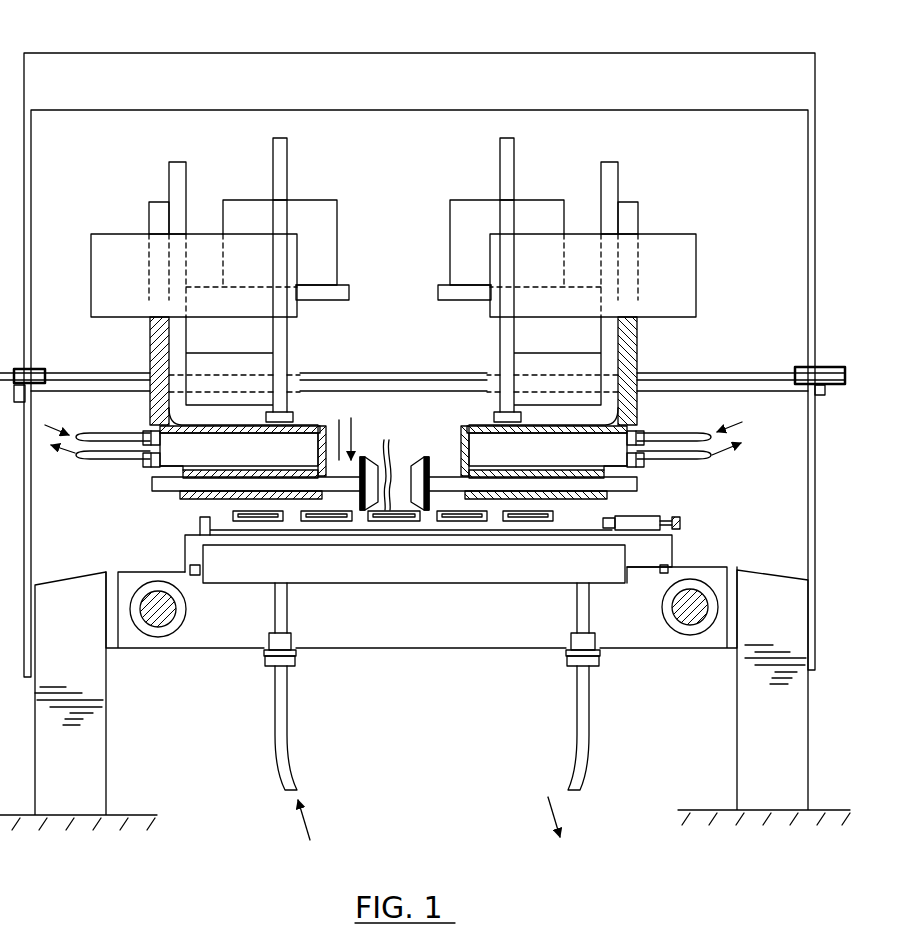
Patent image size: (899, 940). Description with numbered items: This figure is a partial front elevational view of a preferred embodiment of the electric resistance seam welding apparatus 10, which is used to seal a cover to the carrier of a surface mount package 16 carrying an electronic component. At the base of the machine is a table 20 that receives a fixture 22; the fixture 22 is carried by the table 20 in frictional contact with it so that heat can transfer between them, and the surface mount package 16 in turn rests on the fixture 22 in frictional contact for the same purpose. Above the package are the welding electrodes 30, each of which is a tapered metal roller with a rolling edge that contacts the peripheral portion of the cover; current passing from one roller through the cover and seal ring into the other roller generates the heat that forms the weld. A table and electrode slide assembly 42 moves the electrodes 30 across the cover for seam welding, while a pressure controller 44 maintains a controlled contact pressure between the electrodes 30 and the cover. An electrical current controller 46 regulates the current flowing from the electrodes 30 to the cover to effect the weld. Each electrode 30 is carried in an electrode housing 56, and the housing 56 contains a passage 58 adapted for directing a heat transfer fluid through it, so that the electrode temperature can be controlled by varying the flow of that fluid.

The electric resistance seam welding apparatus 10 is at (597, 79).
The electrical current controller 46 is at (141, 306).
The pressure controller 44 is at (284, 353).
The table and electrode slide assembly 42 is at (647, 360).
The electrode housing 56 is at (317, 415).
The passage 58 is at (270, 462).
The welding electrodes 30 is at (421, 458).
The surface mount package 16 is at (387, 440).
The fixture 22 is at (593, 520).
The table 20 is at (672, 543).